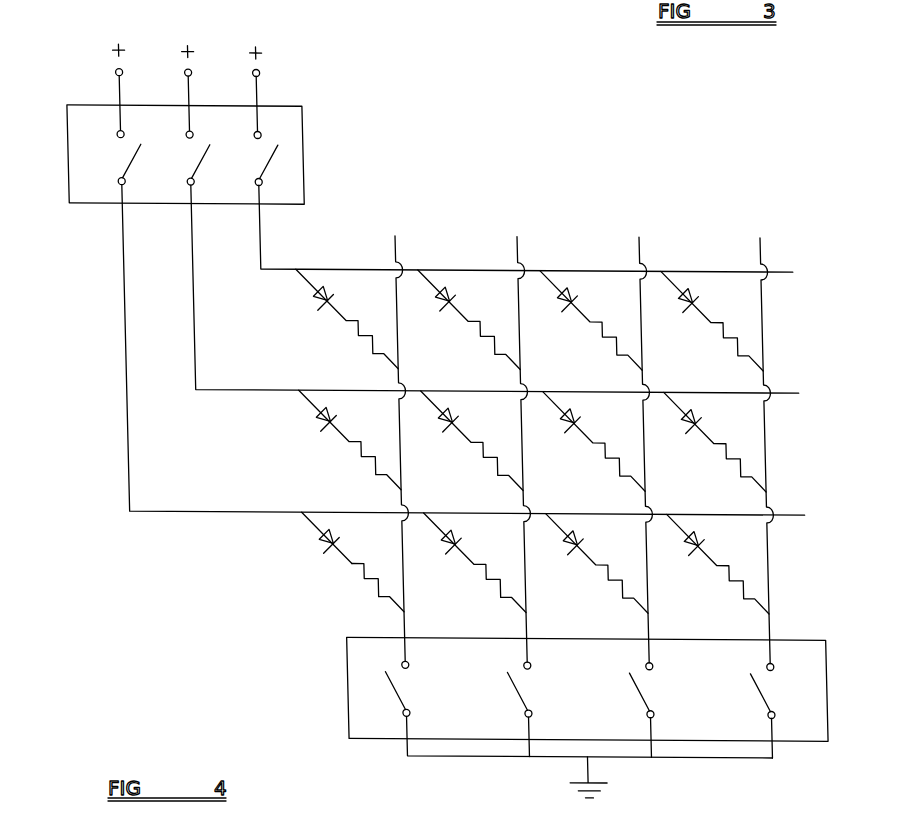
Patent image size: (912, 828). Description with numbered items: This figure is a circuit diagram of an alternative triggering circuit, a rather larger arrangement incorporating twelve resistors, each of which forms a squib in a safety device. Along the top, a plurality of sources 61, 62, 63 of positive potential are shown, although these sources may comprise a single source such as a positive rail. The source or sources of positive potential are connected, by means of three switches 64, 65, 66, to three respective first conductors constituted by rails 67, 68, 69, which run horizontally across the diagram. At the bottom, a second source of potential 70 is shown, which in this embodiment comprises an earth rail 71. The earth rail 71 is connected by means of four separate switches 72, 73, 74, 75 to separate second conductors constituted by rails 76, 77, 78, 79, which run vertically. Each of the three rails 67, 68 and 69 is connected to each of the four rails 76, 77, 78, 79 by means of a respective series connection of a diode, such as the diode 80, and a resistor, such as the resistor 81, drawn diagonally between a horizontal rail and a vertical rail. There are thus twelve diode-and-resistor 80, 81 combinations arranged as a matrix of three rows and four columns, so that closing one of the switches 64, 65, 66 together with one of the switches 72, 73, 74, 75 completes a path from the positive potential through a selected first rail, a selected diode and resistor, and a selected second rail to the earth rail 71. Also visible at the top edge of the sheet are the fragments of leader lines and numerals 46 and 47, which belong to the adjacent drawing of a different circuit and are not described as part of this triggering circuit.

In FIG. 3, the element of FIG. 3 46 is at (375, 0).
In FIG. 3, the element of FIG. 3 47 is at (282, 0).
In FIG. 4, the source of positive potential 61 is at (118, 50).
In FIG. 4, the source of positive potential 62 is at (182, 52).
In FIG. 4, the source of positive potential 63 is at (253, 62).
In FIG. 4, the switch 64 is at (128, 163).
In FIG. 4, the switch 65 is at (200, 159).
In FIG. 4, the switch 66 is at (268, 167).
In FIG. 4, the rail 67 is at (210, 513).
In FIG. 4, the rail 68 is at (267, 392).
In FIG. 4, the rail 69 is at (260, 267).
In FIG. 4, the second source of potential 70 is at (690, 770).
In FIG. 4, the earth rail 71 is at (458, 757).
In FIG. 4, the switch 72 is at (392, 692).
In FIG. 4, the switch 73 is at (517, 692).
In FIG. 4, the switch 74 is at (630, 698).
In FIG. 4, the switch 75 is at (762, 697).
In FIG. 4, the rail 76 is at (395, 307).
In FIG. 4, the rail 77 is at (518, 320).
In FIG. 4, the rail 78 is at (639, 313).
In FIG. 4, the rail 79 is at (760, 317).
In FIG. 4, the diode 80 is at (327, 537).
In FIG. 4, the resistor 81 is at (362, 577).